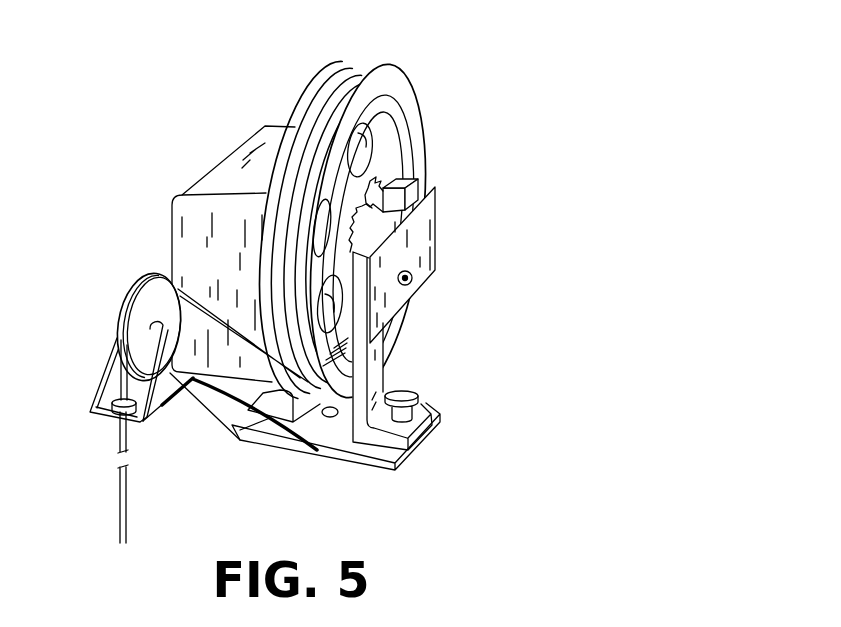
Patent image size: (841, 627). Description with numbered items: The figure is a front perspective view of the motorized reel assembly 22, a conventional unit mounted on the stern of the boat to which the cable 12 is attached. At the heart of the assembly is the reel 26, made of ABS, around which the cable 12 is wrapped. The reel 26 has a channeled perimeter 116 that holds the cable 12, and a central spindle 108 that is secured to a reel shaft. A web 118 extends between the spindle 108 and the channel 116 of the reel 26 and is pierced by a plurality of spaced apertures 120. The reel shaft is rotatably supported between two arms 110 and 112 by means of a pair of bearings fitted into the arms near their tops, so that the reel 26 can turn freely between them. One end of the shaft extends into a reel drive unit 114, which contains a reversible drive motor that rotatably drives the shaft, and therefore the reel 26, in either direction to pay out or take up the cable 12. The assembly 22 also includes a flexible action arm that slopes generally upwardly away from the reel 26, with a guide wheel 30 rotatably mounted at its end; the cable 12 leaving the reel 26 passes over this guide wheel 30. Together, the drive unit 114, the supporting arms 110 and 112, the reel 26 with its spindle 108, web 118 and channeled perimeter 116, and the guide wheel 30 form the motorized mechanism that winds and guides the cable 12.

The cable 12 is at (126, 497).
The motorized reel assembly 22 is at (276, 274).
The reel 26 is at (395, 205).
The guide wheel 30 is at (128, 301).
The central spindle 108 is at (383, 180).
The arm 110 is at (287, 407).
The arm 112 is at (393, 348).
The reel drive unit 114 is at (247, 133).
The channeled perimeter 116 is at (339, 70).
The web 118 is at (378, 142).
The spaced apertures 120 is at (360, 133).